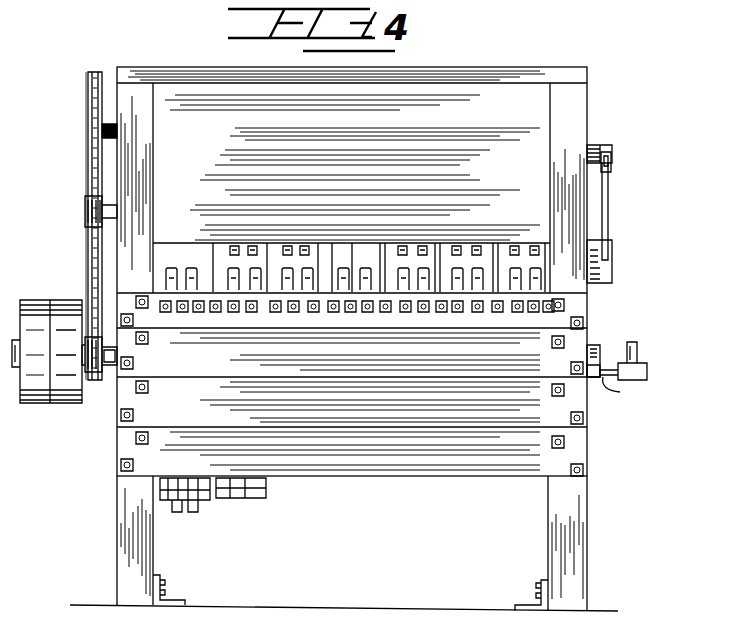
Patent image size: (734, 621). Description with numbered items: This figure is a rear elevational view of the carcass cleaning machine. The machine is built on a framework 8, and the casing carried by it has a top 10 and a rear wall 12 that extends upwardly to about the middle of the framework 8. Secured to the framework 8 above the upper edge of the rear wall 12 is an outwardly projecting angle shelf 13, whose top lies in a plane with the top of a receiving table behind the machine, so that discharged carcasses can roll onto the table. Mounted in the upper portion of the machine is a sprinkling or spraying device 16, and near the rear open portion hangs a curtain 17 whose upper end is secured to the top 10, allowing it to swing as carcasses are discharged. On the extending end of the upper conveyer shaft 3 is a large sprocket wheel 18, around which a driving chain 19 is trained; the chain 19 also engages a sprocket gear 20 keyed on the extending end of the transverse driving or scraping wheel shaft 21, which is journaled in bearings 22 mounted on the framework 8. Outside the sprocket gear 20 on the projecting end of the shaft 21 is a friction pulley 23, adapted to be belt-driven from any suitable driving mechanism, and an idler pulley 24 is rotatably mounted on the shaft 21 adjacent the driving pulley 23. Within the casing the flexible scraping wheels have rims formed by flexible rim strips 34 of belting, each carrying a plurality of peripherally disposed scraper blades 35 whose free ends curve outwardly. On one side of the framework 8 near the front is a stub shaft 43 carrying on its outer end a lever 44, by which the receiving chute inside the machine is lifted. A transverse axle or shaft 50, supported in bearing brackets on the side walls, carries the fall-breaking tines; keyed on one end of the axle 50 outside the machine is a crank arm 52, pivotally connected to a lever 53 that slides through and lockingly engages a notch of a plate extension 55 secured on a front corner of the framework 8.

The upper conveyer shaft 3 is at (90, 235).
The framework 8 is at (130, 540).
The top 10 is at (500, 52).
The rear wall 12 is at (352, 386).
The angle shelf 13 is at (588, 302).
The sprinkling or spraying device 16 is at (104, 128).
The curtain 17 is at (352, 167).
The large sprocket wheel 18 is at (90, 153).
The driving chain 19 is at (96, 273).
The sprocket gear 20 is at (95, 375).
The driving or scraping wheel shaft 21 is at (598, 358).
The bearings 22 is at (598, 380).
The friction pulley 23 is at (65, 351).
The idler pulley 24 is at (47, 351).
The flexible rim strips 34 is at (352, 379).
The scraper blades 35 is at (194, 512).
The stub shaft 43 is at (622, 392).
The lever 44 is at (640, 363).
The transverse axle or shaft 50 is at (612, 156).
The crank arm 52 is at (611, 166).
The lever 53 is at (606, 214).
The plate extension 55 is at (612, 282).